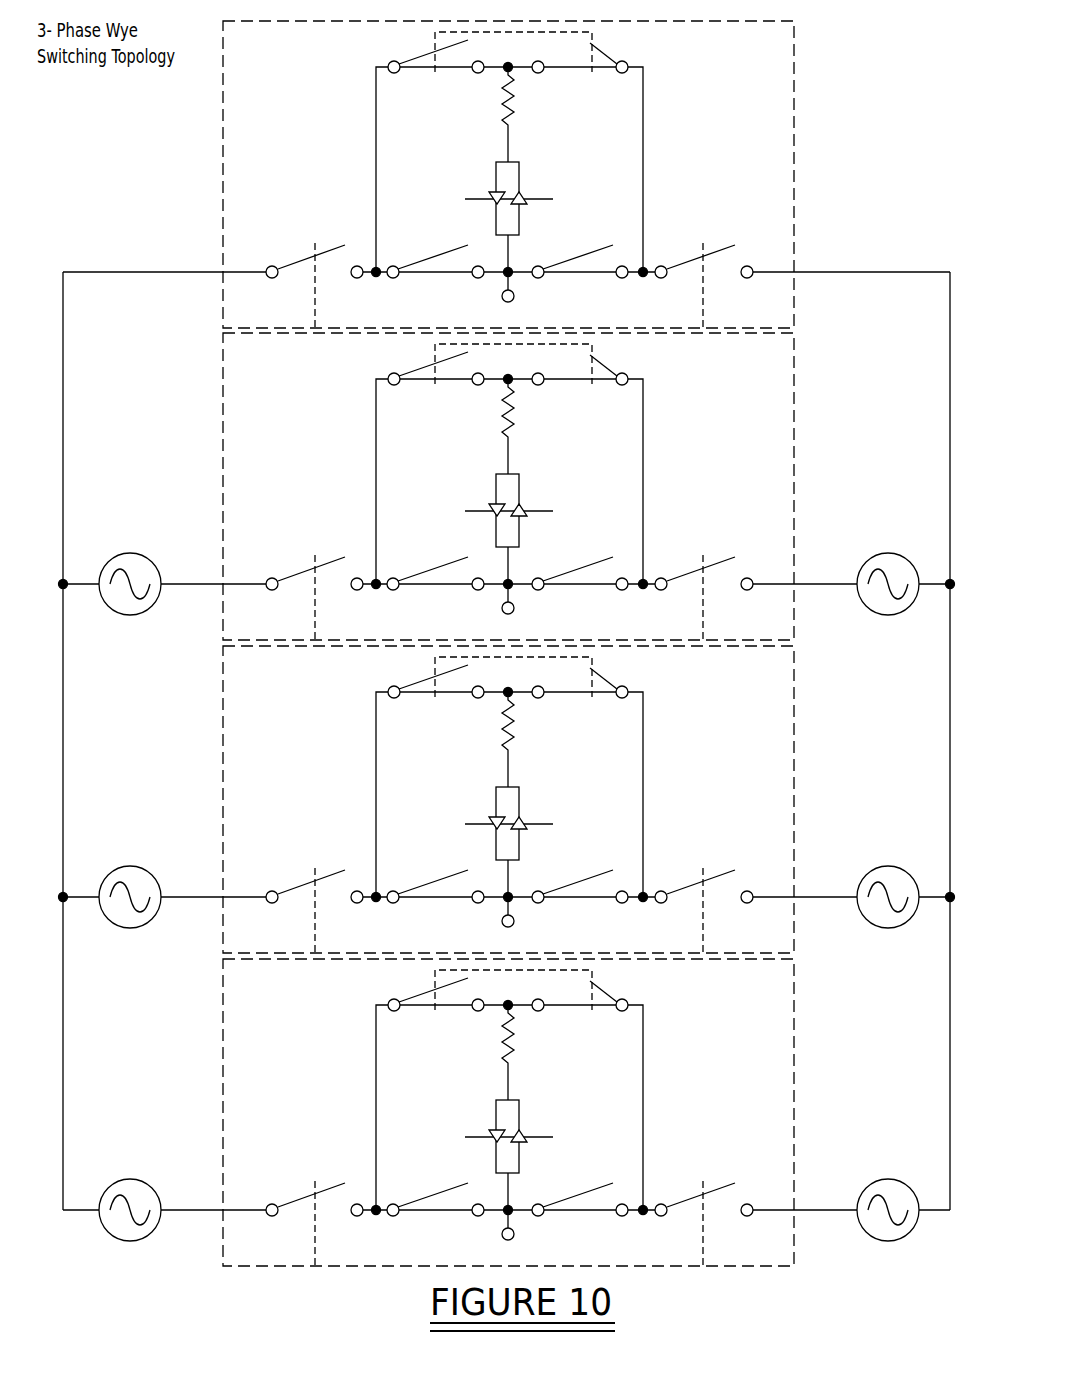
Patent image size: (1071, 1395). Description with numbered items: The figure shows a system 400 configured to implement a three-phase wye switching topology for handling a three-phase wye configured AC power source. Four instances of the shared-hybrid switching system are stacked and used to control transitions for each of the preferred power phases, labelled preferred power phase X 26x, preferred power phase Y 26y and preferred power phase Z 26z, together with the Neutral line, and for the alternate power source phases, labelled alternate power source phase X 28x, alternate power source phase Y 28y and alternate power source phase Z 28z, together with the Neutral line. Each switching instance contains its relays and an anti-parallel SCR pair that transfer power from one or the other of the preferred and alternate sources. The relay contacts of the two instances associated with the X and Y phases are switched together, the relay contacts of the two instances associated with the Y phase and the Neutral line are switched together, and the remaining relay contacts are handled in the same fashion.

The system 400 is at (127, 176).
The preferred power phase X 26x is at (145, 1217).
The preferred power phase Y 26y is at (145, 904).
The preferred power phase Z 26z is at (144, 591).
The alternate power source phase X 28x is at (876, 1214).
The alternate power source phase Y 28y is at (876, 901).
The alternate power source phase Z 28z is at (876, 588).